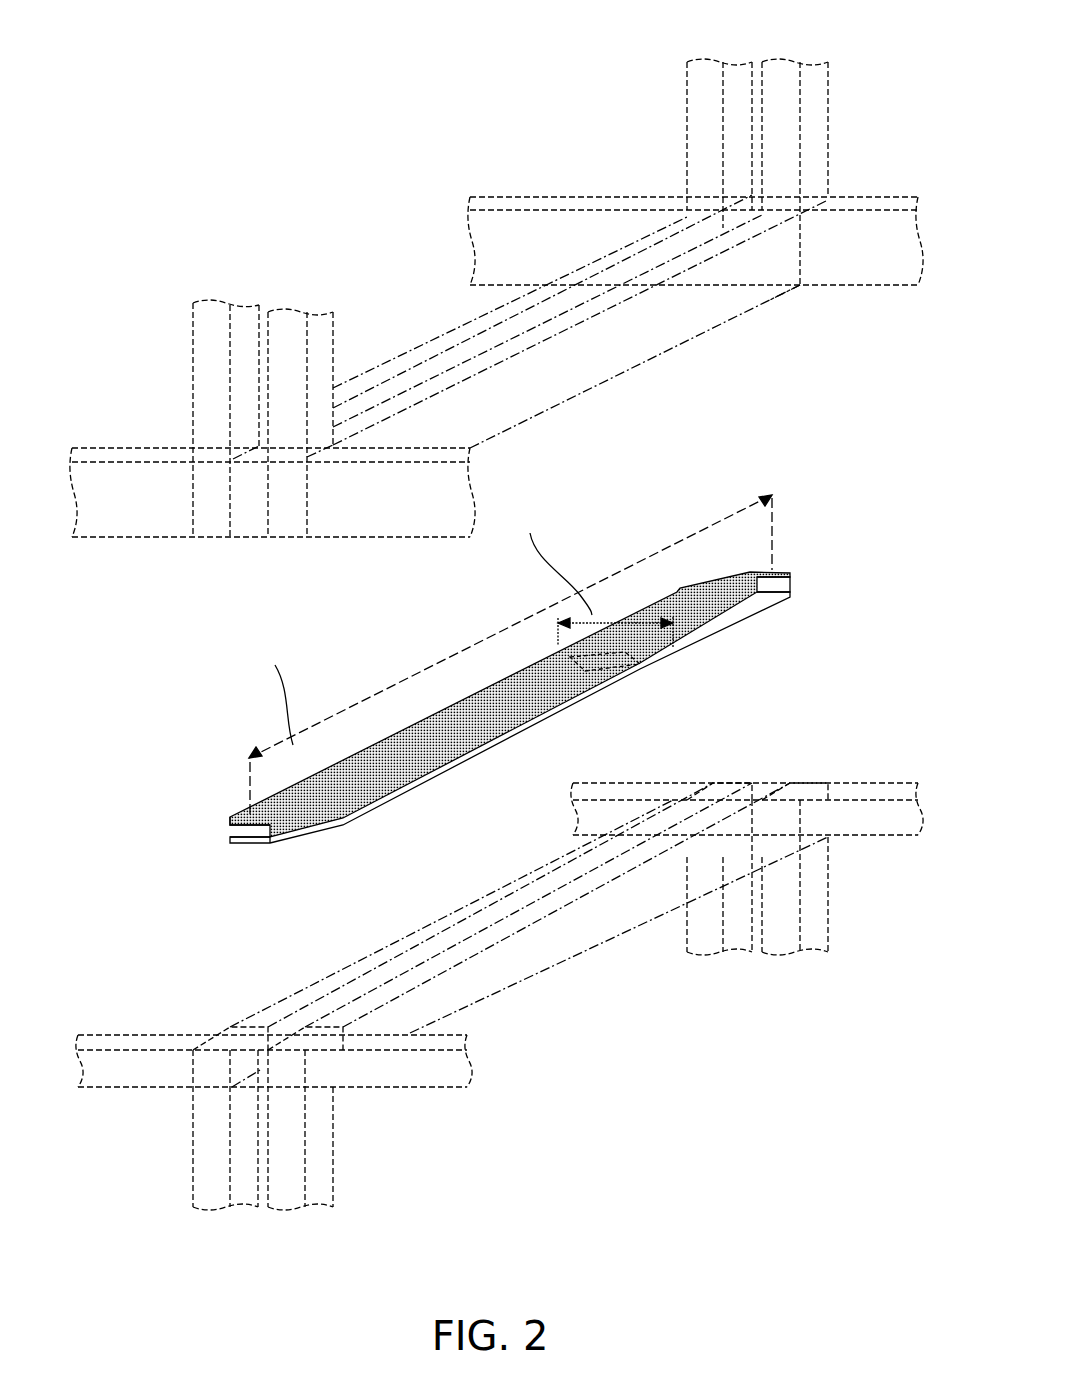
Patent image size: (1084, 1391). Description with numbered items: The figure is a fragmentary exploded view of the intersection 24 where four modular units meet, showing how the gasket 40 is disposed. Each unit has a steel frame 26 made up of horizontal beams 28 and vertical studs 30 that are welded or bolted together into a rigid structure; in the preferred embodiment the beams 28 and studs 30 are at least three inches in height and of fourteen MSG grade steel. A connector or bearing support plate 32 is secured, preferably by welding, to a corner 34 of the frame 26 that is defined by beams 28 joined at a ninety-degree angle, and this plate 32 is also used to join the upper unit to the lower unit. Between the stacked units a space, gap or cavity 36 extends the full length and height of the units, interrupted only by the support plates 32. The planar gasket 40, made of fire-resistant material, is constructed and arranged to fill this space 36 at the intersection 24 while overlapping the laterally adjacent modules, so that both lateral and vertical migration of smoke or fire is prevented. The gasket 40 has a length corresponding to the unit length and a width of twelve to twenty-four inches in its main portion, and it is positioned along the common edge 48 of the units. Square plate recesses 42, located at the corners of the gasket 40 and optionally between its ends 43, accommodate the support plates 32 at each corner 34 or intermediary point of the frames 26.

The intersection 24 is at (224, 960).
The steel frame 26 is at (576, 200).
The horizontal beam 28 is at (682, 318).
The vertical stud 30 is at (700, 73).
The connector or bearing support plate 32 is at (721, 782).
The corner 34 is at (337, 448).
The space, gap or cavity 36 is at (255, 512).
The gasket 40 is at (445, 718).
The plate recess 42 is at (725, 585).
The end 43 is at (777, 572).
The common edge 48 is at (462, 375).